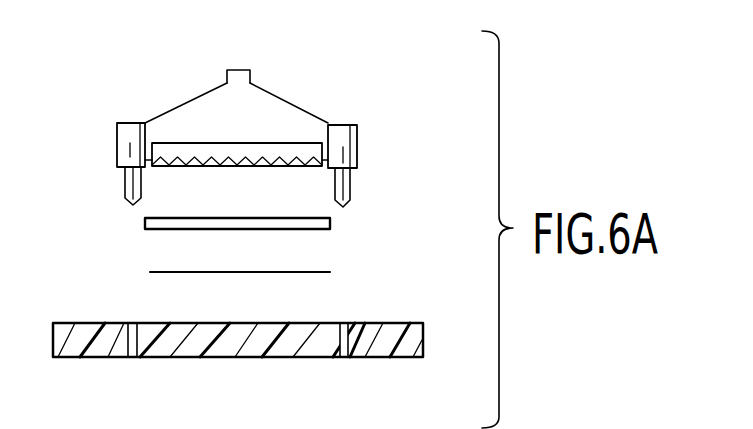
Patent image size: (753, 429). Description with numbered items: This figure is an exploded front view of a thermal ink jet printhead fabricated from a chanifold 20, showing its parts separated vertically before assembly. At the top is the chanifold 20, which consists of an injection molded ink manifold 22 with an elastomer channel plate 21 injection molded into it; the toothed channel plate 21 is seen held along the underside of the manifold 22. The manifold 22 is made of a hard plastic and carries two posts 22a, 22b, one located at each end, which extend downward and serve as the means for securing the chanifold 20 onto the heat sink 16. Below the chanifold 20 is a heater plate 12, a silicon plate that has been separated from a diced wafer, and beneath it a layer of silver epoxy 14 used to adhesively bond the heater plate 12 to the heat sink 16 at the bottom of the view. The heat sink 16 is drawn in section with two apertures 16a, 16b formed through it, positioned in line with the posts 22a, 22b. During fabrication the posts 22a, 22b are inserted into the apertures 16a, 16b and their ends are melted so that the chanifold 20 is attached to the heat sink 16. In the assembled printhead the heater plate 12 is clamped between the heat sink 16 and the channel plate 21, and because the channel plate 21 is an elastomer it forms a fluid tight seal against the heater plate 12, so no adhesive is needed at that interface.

The chanifold 20 is at (318, 65).
The ink manifold 22 is at (197, 108).
The channel plate 21 is at (313, 147).
The post 22a is at (126, 190).
The post 22b is at (350, 180).
The heater plate 12 is at (145, 228).
The silver epoxy 14 is at (150, 272).
The heat sink 16 is at (412, 325).
The aperture 16a is at (131, 359).
The aperture 16b is at (344, 359).